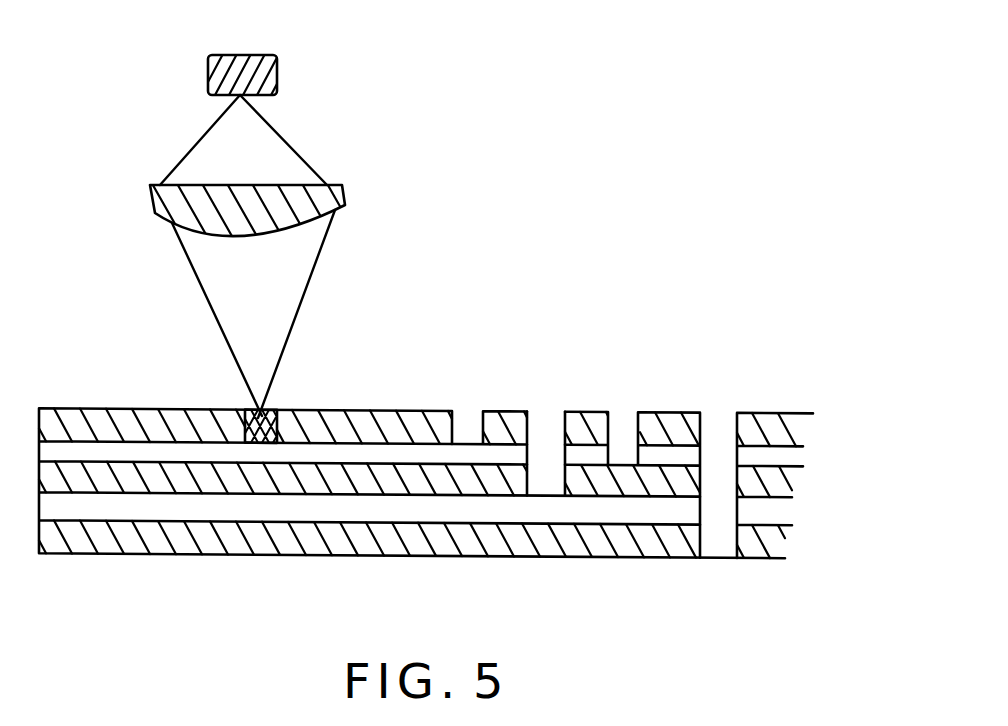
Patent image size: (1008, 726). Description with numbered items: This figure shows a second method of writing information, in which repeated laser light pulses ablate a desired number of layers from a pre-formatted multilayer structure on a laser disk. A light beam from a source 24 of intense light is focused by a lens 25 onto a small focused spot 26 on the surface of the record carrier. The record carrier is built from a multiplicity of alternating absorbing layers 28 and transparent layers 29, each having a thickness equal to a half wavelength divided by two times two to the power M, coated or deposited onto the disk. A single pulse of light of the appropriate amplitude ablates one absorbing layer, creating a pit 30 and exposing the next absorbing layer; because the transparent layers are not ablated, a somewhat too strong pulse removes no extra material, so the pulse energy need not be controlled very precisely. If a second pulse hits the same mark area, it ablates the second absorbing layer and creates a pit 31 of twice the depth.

The source of intense light 24 is at (278, 66).
The lens 25 is at (317, 207).
The focused spot 26 is at (290, 408).
The absorbing layers 28 is at (787, 495).
The transparent layers 29 is at (193, 508).
The pit 30 is at (463, 423).
The pit of twice the depth 31 is at (542, 453).